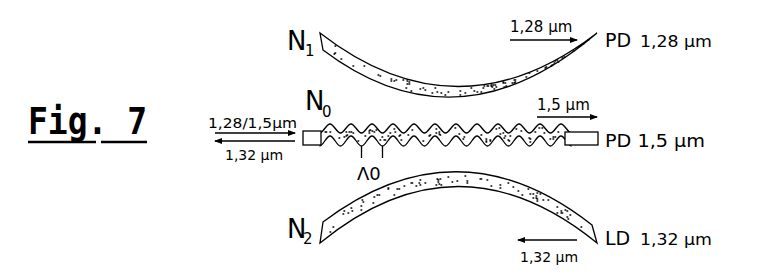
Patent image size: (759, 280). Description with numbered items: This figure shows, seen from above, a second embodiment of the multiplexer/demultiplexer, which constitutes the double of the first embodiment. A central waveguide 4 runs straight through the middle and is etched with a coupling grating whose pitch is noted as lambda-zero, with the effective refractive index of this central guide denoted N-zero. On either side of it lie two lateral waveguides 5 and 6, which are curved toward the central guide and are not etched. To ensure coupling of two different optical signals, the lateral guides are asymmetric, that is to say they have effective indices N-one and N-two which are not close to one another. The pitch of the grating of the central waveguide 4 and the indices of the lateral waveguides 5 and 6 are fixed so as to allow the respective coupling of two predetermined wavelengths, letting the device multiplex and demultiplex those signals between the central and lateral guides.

The central waveguide 4 is at (318, 146).
The lateral waveguide 5 is at (348, 58).
The lateral waveguide 6 is at (349, 217).